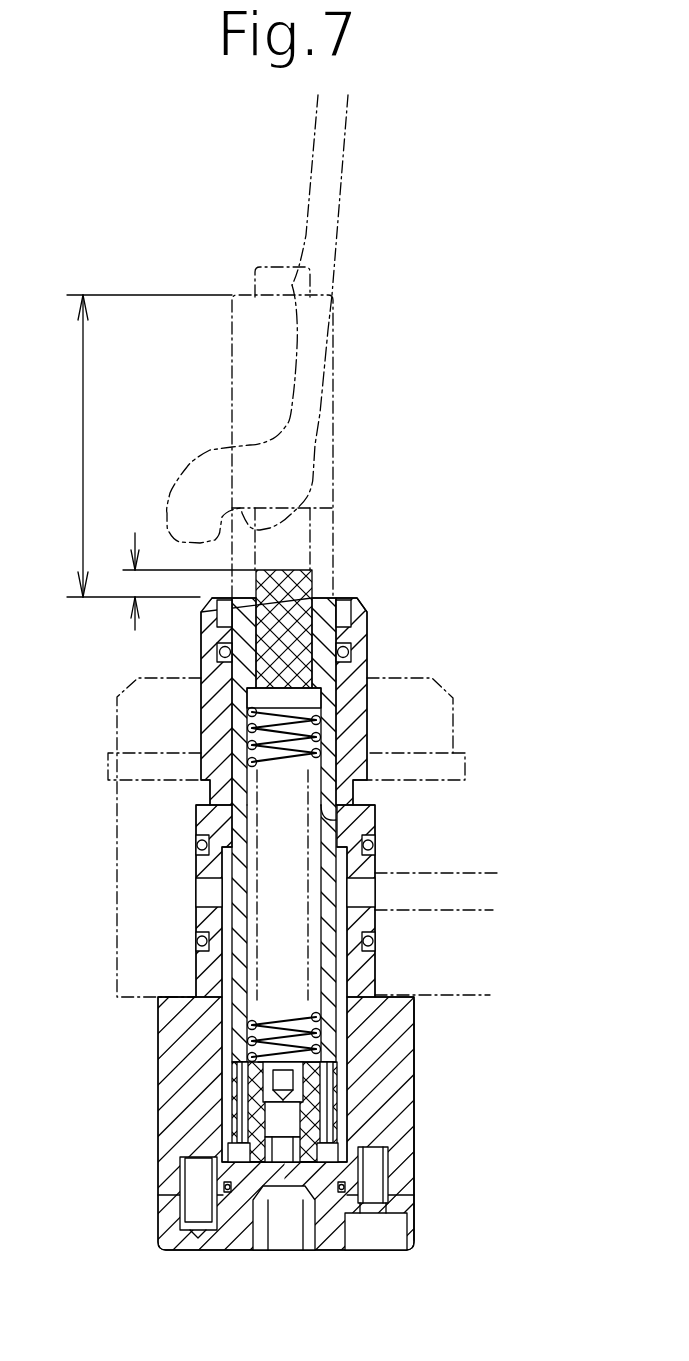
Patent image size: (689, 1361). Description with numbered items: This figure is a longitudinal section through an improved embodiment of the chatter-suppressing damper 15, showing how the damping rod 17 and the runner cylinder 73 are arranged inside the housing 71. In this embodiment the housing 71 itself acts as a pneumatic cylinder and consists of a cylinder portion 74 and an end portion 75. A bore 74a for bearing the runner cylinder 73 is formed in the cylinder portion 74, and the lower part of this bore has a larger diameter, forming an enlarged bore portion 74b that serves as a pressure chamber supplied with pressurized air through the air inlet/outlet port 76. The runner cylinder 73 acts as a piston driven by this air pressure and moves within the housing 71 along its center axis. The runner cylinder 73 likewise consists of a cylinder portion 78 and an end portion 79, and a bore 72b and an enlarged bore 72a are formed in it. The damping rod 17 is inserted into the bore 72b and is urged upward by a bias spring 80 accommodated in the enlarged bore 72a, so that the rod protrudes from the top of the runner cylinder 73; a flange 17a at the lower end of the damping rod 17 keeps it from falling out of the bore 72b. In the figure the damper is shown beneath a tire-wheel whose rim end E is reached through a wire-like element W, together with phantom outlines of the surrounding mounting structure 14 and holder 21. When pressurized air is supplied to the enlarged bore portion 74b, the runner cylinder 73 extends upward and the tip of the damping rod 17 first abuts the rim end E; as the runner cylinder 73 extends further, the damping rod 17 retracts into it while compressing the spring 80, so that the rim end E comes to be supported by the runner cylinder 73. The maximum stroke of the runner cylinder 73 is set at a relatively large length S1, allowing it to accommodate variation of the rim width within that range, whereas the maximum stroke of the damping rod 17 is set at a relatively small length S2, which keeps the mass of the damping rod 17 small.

The welding wire W is at (342, 173).
The rim end E is at (308, 495).
The maximum stroke of the runner cylinder S1 is at (135, 446).
The maximum stroke of the damping rod S2 is at (132, 582).
The chatter-suppressing damper 15 is at (462, 1230).
The mounting base 14 is at (481, 995).
The holder 21 is at (487, 880).
The damping rod 17 is at (320, 574).
The flange 17a is at (302, 698).
The housing 71 is at (413, 1085).
The enlarged bore 72a is at (374, 874).
The bore 72b is at (338, 637).
The runner cylinder 73 is at (357, 603).
The cylinder portion 74 is at (159, 1043).
The bore 74a is at (332, 812).
The enlarged bore portion 74b is at (345, 1016).
The end portion 75 is at (230, 1242).
The air inlet/outlet port 76 is at (206, 893).
The cylinder portion 78 is at (322, 770).
The end portion 79 is at (233, 1147).
The bias spring 80 is at (250, 714).